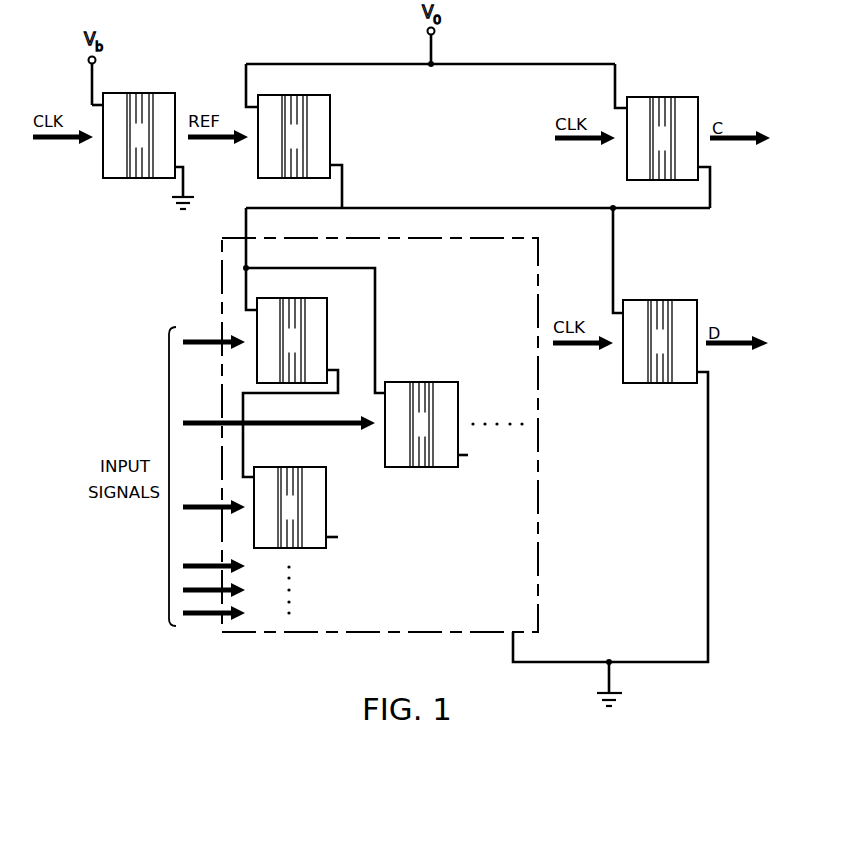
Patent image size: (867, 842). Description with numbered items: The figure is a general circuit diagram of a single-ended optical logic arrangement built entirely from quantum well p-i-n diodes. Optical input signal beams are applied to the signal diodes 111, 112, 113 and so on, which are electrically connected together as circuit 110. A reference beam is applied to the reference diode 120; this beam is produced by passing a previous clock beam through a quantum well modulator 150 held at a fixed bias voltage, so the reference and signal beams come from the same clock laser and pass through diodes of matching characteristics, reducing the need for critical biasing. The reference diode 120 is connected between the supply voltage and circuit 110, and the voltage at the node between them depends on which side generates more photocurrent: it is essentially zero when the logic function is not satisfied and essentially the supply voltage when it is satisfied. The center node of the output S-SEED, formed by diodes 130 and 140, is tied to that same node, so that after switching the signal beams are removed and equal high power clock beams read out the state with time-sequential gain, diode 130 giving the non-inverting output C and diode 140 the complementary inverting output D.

The circuit 110 is at (385, 238).
The diode 111 is at (295, 298).
The diode 112 is at (293, 467).
The diode 113 is at (424, 382).
The reference diode 120 is at (297, 95).
The quantum well p-i-n diode 130 is at (664, 97).
The quantum well p-i-n diode 140 is at (662, 300).
The quantum well modulator 150 is at (141, 93).